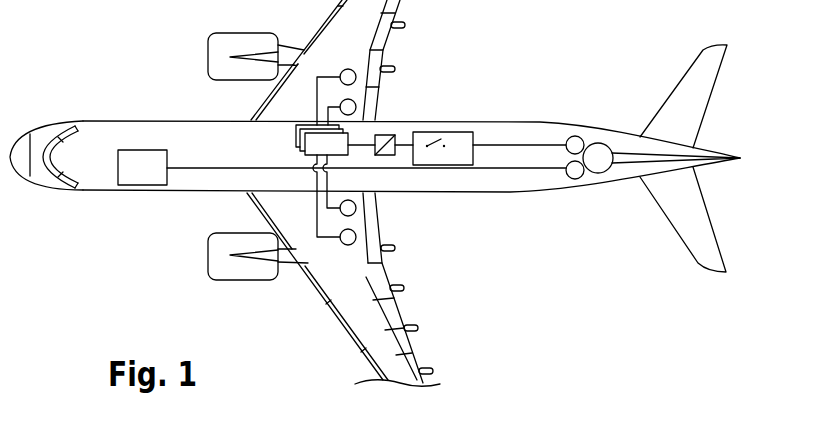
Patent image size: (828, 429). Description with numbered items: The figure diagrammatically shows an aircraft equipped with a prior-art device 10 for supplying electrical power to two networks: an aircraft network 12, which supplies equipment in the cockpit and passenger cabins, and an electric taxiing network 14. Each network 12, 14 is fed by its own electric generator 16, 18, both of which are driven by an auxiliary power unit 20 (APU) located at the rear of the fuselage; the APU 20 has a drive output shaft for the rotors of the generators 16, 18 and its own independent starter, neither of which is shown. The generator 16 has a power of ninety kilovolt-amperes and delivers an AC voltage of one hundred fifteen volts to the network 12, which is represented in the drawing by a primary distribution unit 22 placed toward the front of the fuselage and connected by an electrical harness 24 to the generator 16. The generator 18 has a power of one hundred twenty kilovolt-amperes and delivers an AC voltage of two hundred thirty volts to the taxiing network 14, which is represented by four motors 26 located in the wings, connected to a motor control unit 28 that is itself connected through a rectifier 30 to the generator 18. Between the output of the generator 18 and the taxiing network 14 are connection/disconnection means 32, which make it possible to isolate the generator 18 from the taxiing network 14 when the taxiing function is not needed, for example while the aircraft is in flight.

The device for supplying electrical power 10 is at (507, 75).
The aircraft network 12 is at (206, 180).
The electric taxiing network 14 is at (409, 133).
The electric generator 16 is at (576, 179).
The electric generator 18 is at (577, 136).
The auxiliary power unit 20 is at (606, 143).
The primary distribution unit 22 is at (152, 150).
The electrical harness 24 is at (462, 165).
The motors 26 is at (356, 79).
The motor control unit 28 is at (296, 133).
The rectifier 30 is at (390, 155).
The connection/disconnection means 32 is at (444, 132).